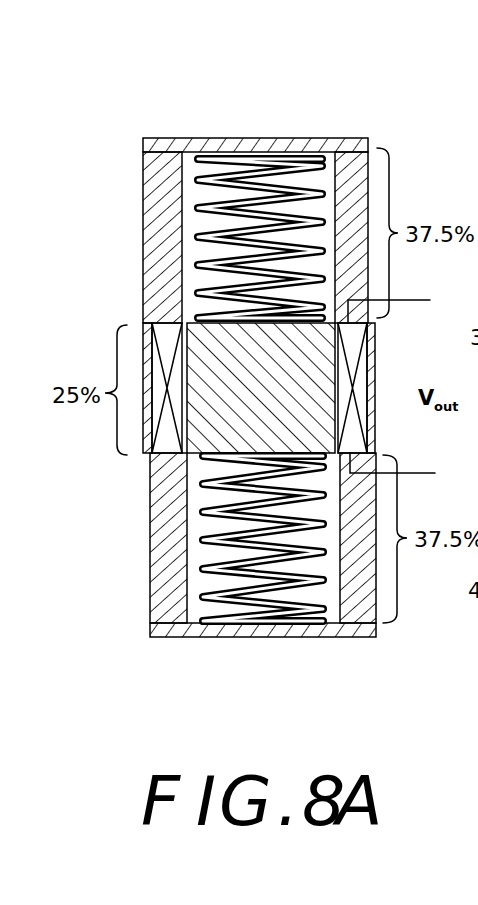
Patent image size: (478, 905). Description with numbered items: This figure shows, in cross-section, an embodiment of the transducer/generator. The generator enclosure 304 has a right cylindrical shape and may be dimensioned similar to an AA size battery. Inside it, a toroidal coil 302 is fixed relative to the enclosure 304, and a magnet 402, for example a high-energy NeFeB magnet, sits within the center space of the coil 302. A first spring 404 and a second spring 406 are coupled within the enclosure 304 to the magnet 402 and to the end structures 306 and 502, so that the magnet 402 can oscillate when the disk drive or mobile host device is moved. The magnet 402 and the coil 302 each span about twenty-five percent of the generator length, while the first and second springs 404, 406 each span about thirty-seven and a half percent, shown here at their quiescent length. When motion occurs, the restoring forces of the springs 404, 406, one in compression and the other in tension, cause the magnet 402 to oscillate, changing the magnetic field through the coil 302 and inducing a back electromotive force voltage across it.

The coil 302 is at (158, 326).
The generator enclosure 304 is at (153, 187).
The enclosure end structure 306 is at (270, 138).
The magnet 402 is at (190, 455).
The first spring 404 is at (318, 139).
The second spring 406 is at (198, 567).
The enclosure end structure 502 is at (262, 640).